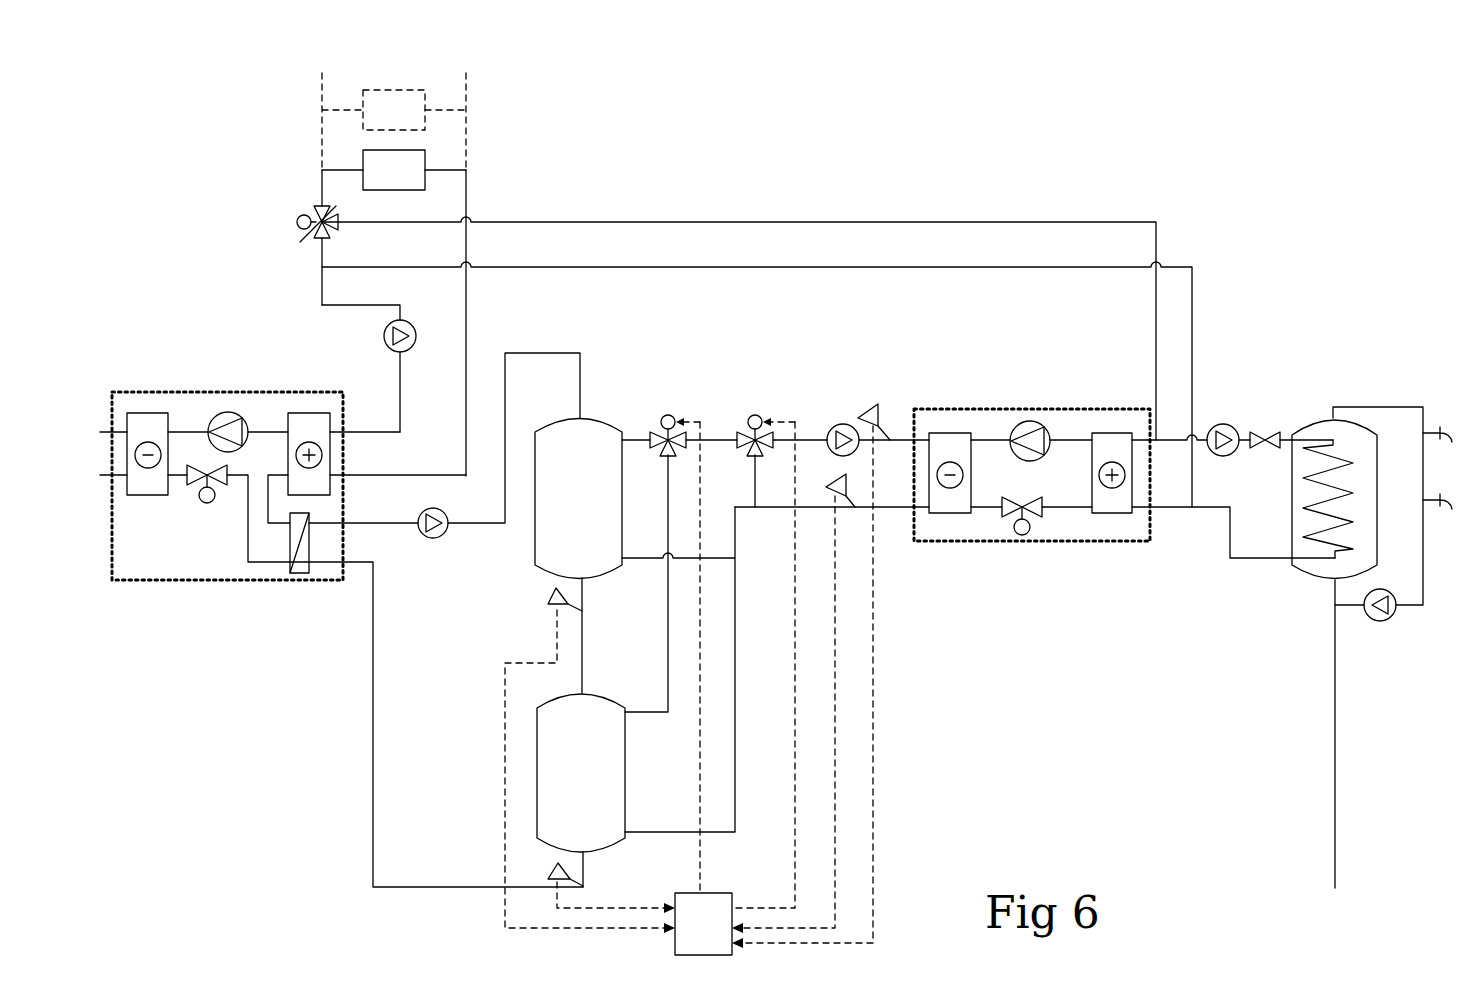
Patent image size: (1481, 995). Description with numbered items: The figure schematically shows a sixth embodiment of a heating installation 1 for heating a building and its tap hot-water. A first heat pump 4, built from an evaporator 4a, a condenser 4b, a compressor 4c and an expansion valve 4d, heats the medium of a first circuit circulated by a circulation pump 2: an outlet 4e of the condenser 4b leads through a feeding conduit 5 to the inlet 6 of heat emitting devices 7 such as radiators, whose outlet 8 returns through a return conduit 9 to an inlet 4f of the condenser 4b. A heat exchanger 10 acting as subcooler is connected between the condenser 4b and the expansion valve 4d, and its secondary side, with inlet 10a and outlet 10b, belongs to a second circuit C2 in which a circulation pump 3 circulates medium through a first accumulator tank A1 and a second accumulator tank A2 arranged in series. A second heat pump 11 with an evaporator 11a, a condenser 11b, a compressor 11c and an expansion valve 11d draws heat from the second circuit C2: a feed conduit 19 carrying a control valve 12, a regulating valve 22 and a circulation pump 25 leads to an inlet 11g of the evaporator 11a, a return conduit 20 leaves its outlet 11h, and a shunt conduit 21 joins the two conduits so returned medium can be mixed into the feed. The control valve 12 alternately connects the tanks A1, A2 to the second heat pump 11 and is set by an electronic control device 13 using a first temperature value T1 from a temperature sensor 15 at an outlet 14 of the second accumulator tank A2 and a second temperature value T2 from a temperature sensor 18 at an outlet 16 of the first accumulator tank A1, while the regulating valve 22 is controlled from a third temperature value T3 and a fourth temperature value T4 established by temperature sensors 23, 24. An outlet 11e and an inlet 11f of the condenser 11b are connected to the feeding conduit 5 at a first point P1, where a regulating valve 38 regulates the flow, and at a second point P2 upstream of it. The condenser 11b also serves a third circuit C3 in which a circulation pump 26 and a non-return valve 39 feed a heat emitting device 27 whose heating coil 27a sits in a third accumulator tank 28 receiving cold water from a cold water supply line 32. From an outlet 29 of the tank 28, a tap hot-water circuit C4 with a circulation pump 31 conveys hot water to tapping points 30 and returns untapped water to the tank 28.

The heating installation 1 is at (915, 176).
The circulation pump 2 is at (384, 337).
The circulation pump 3 is at (433, 540).
The first heat pump 4 is at (196, 392).
The evaporator 4a is at (152, 413).
The condenser 4b is at (300, 413).
The compressor 4c is at (232, 412).
The expansion valve 4d is at (196, 492).
The outlet 4e is at (338, 432).
The inlet 4f is at (347, 475).
The feeding conduit 5 is at (362, 306).
The inlet 6 is at (320, 170).
The heat emitting devices 7 is at (388, 92).
The outlet 8 is at (468, 170).
The return conduit 9 is at (470, 288).
The heat exchanger 10 is at (296, 575).
The inlet 10a is at (316, 568).
The outlet 10b is at (313, 525).
The second heat pump 11 is at (1066, 542).
The evaporator 11a is at (970, 433).
The condenser 11b is at (1100, 433).
The compressor 11c is at (1030, 420).
The expansion valve 11d is at (1010, 522).
The outlet 11e is at (1134, 433).
The inlet 11f is at (1135, 520).
The inlet 11g is at (932, 433).
The outlet 11h is at (930, 514).
The control valve 12 is at (662, 432).
The electronic control device 13 is at (722, 896).
The outlet 14 is at (568, 854).
The temperature sensor 15 is at (548, 864).
The outlet 16 is at (570, 580).
The temperature sensor 18 is at (550, 602).
The feed conduit 19 is at (808, 430).
The return conduit 20 is at (784, 513).
The shunt conduit 21 is at (755, 480).
The regulating valve 22 is at (748, 432).
The temperature sensor 23 is at (875, 406).
The temperature sensor 24 is at (826, 486).
The circulation pump 25 is at (841, 424).
The circulation pump 26 is at (1226, 432).
The heat emitting device 27 is at (1320, 576).
The heating coil 27a is at (1348, 532).
The third accumulator tank 28 is at (1372, 480).
The outlet 29 is at (1333, 418).
The tapping points 30 is at (1440, 425).
The circulation pump 31 is at (1388, 616).
The cold water supply line 32 is at (1340, 744).
The regulating valve 38 is at (312, 216).
The non-return valve 39 is at (1268, 432).
The first accumulator tank A1 is at (563, 429).
The second accumulator tank A2 is at (602, 706).
The first point P1 is at (707, 328).
The second point P2 is at (320, 270).
The first temperature value T1 is at (604, 869).
The second temperature value T2 is at (604, 599).
The third temperature value T3 is at (898, 455).
The fourth temperature value T4 is at (898, 519).
The second circuit C2 is at (556, 320).
The third circuit C3 is at (1250, 574).
The tap hot-water circuit C4 is at (1372, 392).